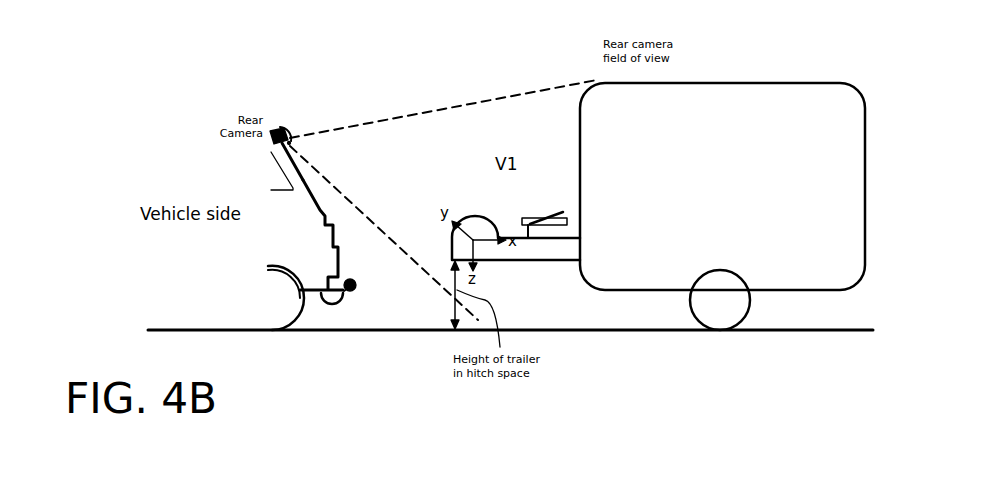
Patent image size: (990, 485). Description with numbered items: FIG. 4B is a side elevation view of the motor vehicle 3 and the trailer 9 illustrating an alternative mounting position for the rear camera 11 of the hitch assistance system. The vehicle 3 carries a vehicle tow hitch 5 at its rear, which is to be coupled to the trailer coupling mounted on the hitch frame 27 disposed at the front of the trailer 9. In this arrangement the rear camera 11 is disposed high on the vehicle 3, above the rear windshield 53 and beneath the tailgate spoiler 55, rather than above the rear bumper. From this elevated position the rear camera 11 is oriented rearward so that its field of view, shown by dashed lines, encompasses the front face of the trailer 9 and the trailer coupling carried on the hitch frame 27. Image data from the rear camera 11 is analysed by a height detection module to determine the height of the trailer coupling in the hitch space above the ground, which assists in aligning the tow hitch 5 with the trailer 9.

The motor vehicle 3 is at (228, 260).
The vehicle tow hitch 5 is at (352, 291).
The trailer 9 is at (883, 266).
The rear camera 11 is at (291, 143).
The hitch frame 27 is at (533, 248).
The rear windshield 53 is at (282, 170).
The tailgate spoiler 55 is at (278, 135).